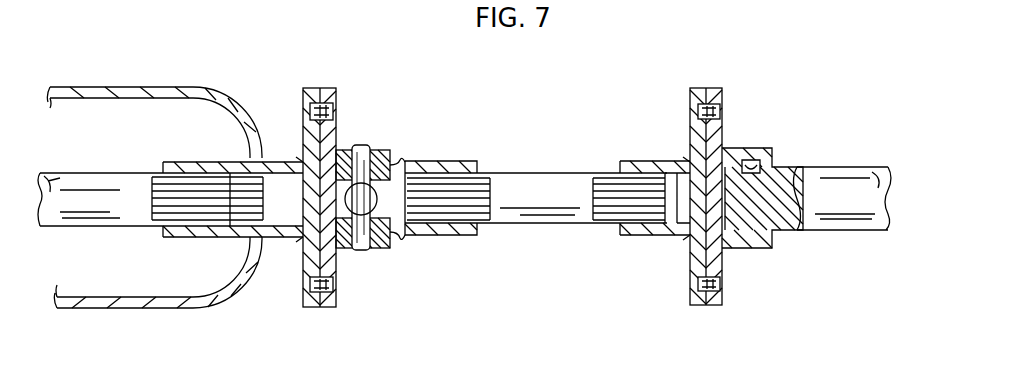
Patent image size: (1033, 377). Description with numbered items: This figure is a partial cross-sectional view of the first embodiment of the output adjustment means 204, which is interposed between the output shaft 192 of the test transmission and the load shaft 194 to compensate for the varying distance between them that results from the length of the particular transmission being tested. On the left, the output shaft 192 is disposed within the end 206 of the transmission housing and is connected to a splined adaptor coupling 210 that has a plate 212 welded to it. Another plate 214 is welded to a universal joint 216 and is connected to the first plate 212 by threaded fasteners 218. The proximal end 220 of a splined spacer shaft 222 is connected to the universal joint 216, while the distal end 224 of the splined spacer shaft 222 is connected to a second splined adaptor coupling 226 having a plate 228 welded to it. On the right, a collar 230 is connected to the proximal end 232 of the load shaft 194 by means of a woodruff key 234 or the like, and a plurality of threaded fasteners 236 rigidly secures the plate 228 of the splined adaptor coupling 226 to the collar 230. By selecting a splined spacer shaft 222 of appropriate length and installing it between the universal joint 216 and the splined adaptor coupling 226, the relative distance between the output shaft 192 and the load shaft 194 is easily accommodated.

The output shaft 192 is at (98, 182).
The load shaft 194 is at (860, 163).
The output adjustment means 204 is at (544, 122).
The end of the transmission housing 206 is at (155, 90).
The splined adaptor coupling 210 is at (202, 232).
The plate 212 is at (300, 258).
The plate 214 is at (333, 270).
The universal joint 216 is at (408, 150).
The threaded fasteners 218 is at (335, 115).
The proximal end of the splined spacer shaft 220 is at (485, 175).
The splined spacer shaft 222 is at (543, 187).
The distal end of the splined spacer shaft 224 is at (608, 172).
The splined adaptor coupling 226 is at (648, 237).
The plate 228 is at (687, 258).
The collar 230 is at (715, 143).
The proximal end of the load shaft 232 is at (803, 168).
The woodruff key 234 is at (750, 160).
The threaded fasteners 236 is at (720, 98).